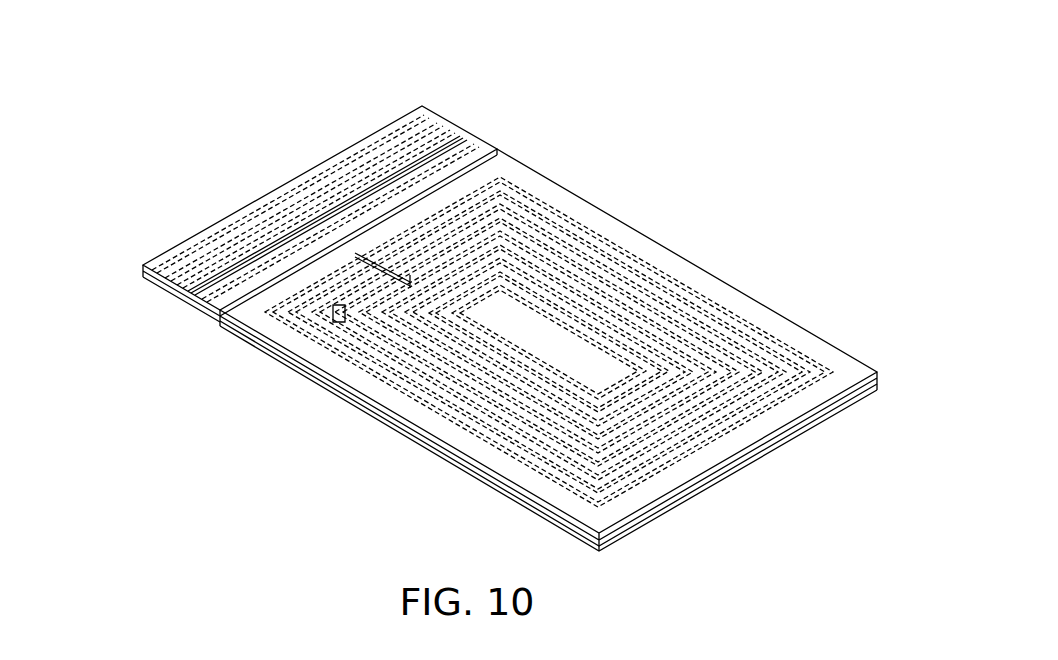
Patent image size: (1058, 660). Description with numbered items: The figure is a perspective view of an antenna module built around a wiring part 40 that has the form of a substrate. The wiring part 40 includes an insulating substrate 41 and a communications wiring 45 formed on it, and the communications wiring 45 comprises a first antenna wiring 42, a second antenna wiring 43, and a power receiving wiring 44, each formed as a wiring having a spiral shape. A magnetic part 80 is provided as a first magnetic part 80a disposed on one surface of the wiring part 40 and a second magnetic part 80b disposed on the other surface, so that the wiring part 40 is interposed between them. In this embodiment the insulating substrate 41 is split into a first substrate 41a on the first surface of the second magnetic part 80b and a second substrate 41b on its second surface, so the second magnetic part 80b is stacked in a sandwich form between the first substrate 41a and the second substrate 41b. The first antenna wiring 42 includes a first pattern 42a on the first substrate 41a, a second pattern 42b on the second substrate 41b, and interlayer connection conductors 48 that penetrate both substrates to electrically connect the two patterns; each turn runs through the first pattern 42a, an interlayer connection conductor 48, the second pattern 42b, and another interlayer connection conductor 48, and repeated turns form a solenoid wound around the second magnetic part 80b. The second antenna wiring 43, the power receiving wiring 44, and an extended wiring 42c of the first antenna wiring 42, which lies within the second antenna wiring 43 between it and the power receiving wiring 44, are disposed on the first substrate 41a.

The wiring part 40 is at (465, 279).
The insulating substrate 41 is at (284, 214).
The first substrate 41a is at (143, 275).
The second substrate 41b is at (218, 222).
The first antenna wiring 42 is at (422, 236).
The first pattern 42a is at (500, 140).
The second pattern 42b is at (445, 113).
The extended wiring 42c is at (573, 277).
The second antenna wiring 43 is at (678, 277).
The power receiving wiring 44 is at (670, 357).
The communications wiring 45 is at (492, 257).
The interlayer connection conductors 48 is at (533, 175).
The magnetic part 80 is at (465, 350).
The first magnetic part 80a is at (232, 335).
The second magnetic part 80b is at (218, 325).